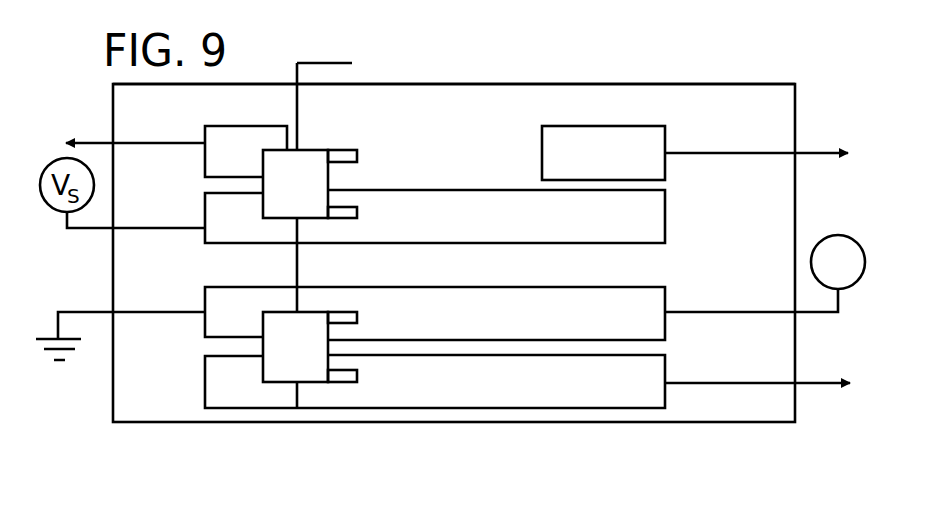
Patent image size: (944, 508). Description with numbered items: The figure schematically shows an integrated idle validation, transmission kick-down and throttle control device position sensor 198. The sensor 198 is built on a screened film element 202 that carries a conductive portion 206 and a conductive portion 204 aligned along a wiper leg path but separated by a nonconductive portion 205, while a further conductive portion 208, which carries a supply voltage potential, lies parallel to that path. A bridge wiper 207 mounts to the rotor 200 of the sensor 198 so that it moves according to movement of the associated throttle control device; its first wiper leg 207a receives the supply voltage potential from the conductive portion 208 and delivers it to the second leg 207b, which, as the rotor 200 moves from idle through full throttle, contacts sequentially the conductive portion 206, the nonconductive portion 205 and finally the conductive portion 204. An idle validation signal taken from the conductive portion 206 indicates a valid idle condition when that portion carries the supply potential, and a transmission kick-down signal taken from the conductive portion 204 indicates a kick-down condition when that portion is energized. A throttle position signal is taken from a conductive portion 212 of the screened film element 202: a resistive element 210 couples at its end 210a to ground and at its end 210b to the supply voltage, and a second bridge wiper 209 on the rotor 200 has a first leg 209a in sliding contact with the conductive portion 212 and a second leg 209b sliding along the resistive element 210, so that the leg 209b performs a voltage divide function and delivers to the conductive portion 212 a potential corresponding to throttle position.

The position sensor 198 is at (495, 444).
The rotor 200 is at (325, 63).
The screened film element 202 is at (634, 84).
The conductive portion 204 is at (665, 133).
The nonconductive portion 205 is at (517, 140).
The conductive portion 206 is at (205, 131).
The bridge wiper 207 is at (263, 192).
The first wiper leg 207a is at (357, 212).
The second wiper leg 207b is at (357, 157).
The conductive portion 208 is at (665, 222).
The bridge wiper 209 is at (263, 352).
The first wiper leg 209a is at (357, 377).
The second wiper leg 209b is at (357, 316).
The resistive element 210 is at (530, 287).
The end of resistive element 210a is at (205, 293).
The end of resistive element 210b is at (665, 295).
The conductive portion 212 is at (665, 373).